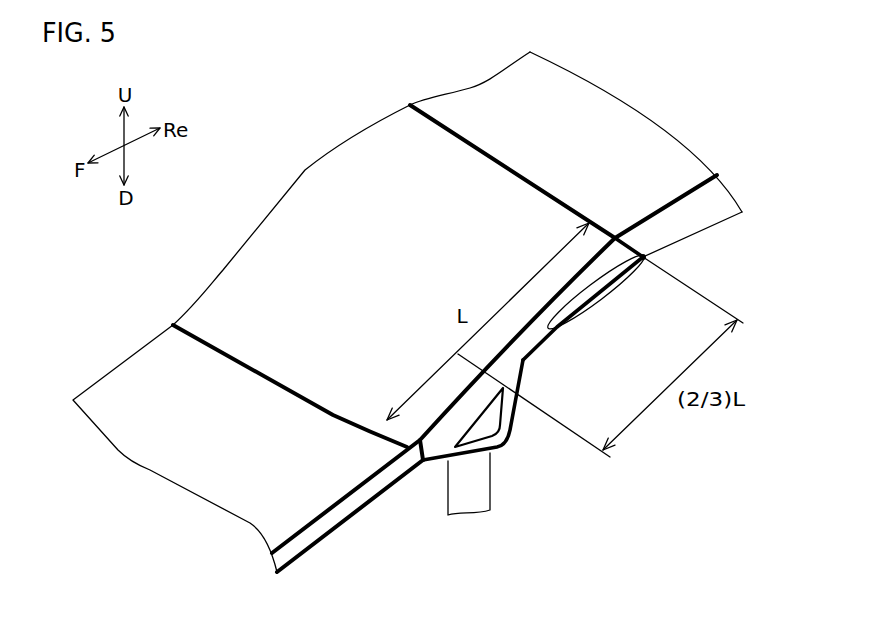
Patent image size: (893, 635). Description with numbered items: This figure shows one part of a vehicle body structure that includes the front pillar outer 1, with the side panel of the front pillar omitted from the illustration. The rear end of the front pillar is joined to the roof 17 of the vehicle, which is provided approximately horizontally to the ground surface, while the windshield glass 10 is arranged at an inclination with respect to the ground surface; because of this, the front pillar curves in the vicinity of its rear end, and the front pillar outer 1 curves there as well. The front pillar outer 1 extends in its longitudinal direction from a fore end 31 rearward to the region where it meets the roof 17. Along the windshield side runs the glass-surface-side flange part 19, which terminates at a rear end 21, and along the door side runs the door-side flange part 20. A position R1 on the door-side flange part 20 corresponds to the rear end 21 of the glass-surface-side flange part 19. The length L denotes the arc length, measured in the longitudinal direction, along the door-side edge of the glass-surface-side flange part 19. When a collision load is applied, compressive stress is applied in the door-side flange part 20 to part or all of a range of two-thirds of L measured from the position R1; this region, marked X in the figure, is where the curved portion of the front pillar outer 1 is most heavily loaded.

The front pillar outer 1 is at (580, 472).
The windshield glass 10 is at (295, 227).
The roof 17 is at (640, 147).
The glass-surface-side flange part 19 is at (470, 390).
The door-side flange part 20 is at (547, 338).
The rear end of the glass-surface-side flange part 21 is at (614, 234).
The fore end of the front pillar outer 31 is at (417, 448).
The position corresponding to the rear end of the glass-surface-side flange part R1 is at (646, 257).
The bent region X is at (607, 298).